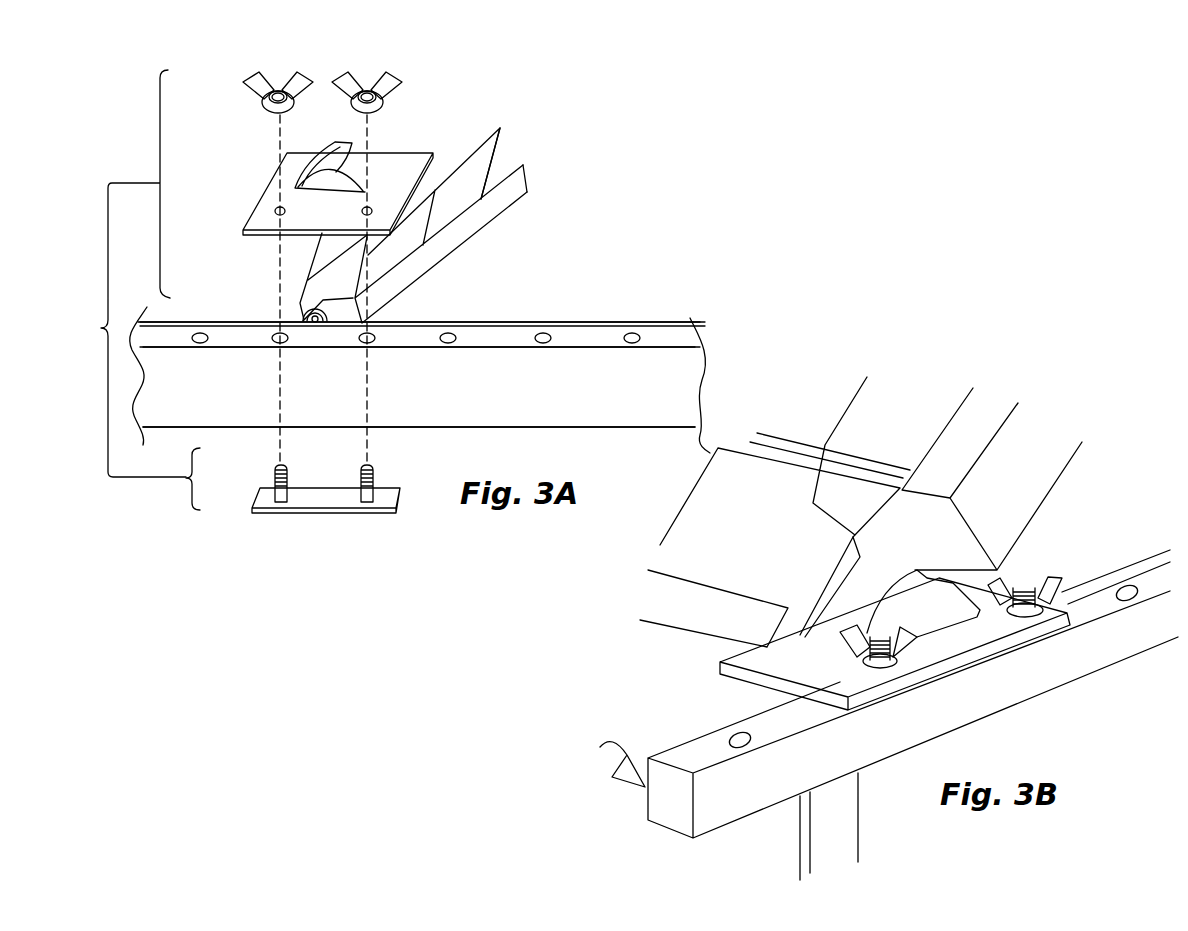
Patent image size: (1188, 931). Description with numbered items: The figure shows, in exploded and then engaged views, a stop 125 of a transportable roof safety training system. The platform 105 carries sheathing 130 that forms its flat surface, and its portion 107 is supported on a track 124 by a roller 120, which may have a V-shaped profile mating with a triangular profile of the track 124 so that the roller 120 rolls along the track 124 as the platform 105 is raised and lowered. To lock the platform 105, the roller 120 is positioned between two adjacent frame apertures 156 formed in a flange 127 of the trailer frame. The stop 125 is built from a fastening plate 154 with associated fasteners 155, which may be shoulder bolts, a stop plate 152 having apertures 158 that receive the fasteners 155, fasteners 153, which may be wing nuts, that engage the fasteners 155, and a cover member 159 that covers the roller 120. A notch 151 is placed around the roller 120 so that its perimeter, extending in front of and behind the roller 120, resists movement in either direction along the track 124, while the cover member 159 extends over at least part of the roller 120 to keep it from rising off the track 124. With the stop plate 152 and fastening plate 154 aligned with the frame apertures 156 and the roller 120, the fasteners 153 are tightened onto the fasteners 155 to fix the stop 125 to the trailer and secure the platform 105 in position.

In FIG. 3A, the platform 105 is at (470, 250).
In FIG. 3B, the platform 105 is at (1082, 458).
In FIG. 3A, the second portion of the platform 107 is at (520, 180).
In FIG. 3A, the roller 120 is at (305, 313).
In FIG. 3A, the track 124 is at (578, 322).
In FIG. 3B, the track 124 is at (1123, 570).
In FIG. 3A, the stop 125 is at (389, 290).
In FIG. 3B, the stop 125 is at (1000, 672).
In FIG. 3A, the flange 127 is at (585, 348).
In FIG. 3A, the sheathing 130 is at (462, 190).
In FIG. 3A, the notch 151 is at (352, 163).
In FIG. 3A, the stop plate 152 is at (413, 154).
In FIG. 3B, the stop plate 152 is at (718, 665).
In FIG. 3A, the fasteners 153 is at (257, 87).
In FIG. 3B, the fasteners 153 is at (1057, 580).
In FIG. 3A, the fastening plate 154 is at (388, 488).
In FIG. 3A, the fasteners 155 is at (274, 474).
In FIG. 3B, the fasteners 155 is at (1023, 587).
In FIG. 3A, the frame apertures 156 is at (449, 323).
In FIG. 3A, the apertures 158 is at (275, 210).
In FIG. 3A, the cover member 159 is at (300, 145).
In FIG. 3B, the cover member 159 is at (855, 550).